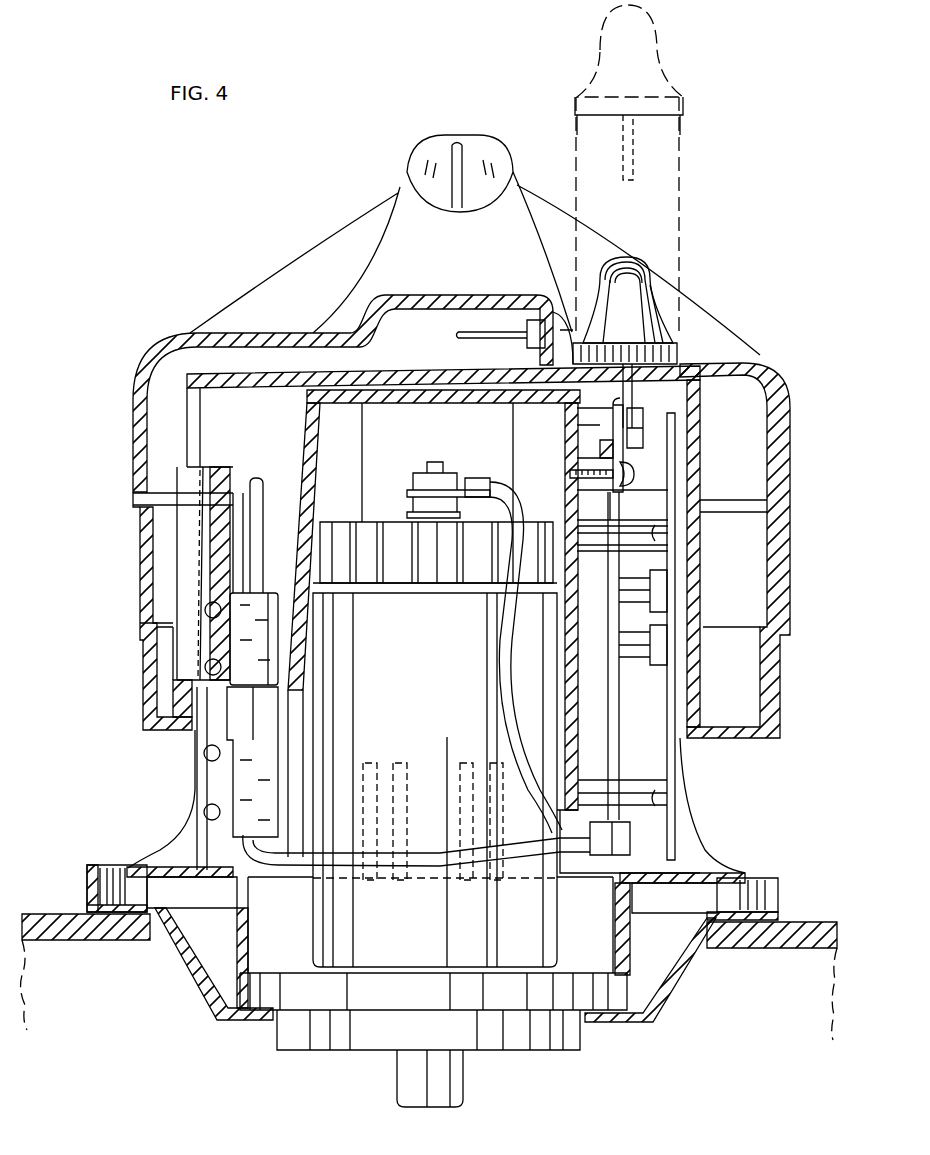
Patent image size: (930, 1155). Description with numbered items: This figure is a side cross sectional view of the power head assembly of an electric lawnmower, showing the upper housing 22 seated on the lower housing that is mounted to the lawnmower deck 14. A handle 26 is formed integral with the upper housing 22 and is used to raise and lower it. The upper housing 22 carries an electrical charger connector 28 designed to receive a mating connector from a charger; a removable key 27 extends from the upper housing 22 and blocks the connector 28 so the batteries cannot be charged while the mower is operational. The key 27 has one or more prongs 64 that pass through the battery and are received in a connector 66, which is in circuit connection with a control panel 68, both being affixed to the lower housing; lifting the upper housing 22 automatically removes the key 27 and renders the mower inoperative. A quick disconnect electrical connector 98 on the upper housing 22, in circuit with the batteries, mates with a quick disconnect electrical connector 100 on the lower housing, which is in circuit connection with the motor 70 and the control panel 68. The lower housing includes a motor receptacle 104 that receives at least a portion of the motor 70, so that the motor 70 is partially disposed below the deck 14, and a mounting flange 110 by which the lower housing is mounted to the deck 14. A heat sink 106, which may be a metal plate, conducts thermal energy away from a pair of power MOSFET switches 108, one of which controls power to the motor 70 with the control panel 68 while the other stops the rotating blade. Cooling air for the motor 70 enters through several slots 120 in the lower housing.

The lawnmower deck 14 is at (93, 927).
The upper housing 22 is at (257, 310).
The handle 26 is at (413, 157).
The removable key 27 is at (640, 313).
The electrical charger connector 28 is at (537, 340).
The prongs 64 is at (645, 407).
The connector 66 is at (600, 432).
The control panel 68 is at (613, 503).
The motor 70 is at (428, 659).
The quick disconnect electrical connector 98 is at (254, 581).
The quick disconnect electrical connector 100 is at (253, 767).
The motor receptacle 104 is at (310, 468).
The heat sink 106 is at (675, 835).
The power MOSFET switches 108 is at (655, 660).
The mounting flange 110 is at (130, 868).
The slots 120 is at (497, 762).